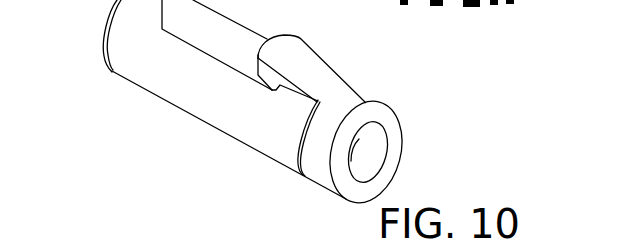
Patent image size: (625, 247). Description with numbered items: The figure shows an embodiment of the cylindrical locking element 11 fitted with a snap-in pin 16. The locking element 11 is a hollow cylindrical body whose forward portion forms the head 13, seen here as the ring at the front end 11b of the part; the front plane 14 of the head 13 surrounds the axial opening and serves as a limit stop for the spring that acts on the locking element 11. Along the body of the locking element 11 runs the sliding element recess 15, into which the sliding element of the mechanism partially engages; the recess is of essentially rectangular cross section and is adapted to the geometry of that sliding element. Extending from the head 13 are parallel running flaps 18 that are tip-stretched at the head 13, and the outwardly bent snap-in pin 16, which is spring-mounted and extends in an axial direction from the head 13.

The locking element 11 is at (174, 135).
The front end of sleeve 11b is at (401, 128).
The head 13 is at (362, 102).
The front plane 14 is at (339, 170).
The sliding element recess 15 is at (150, 5).
The snap-in pin 16 is at (321, 61).
The flaps 18 is at (257, 31).